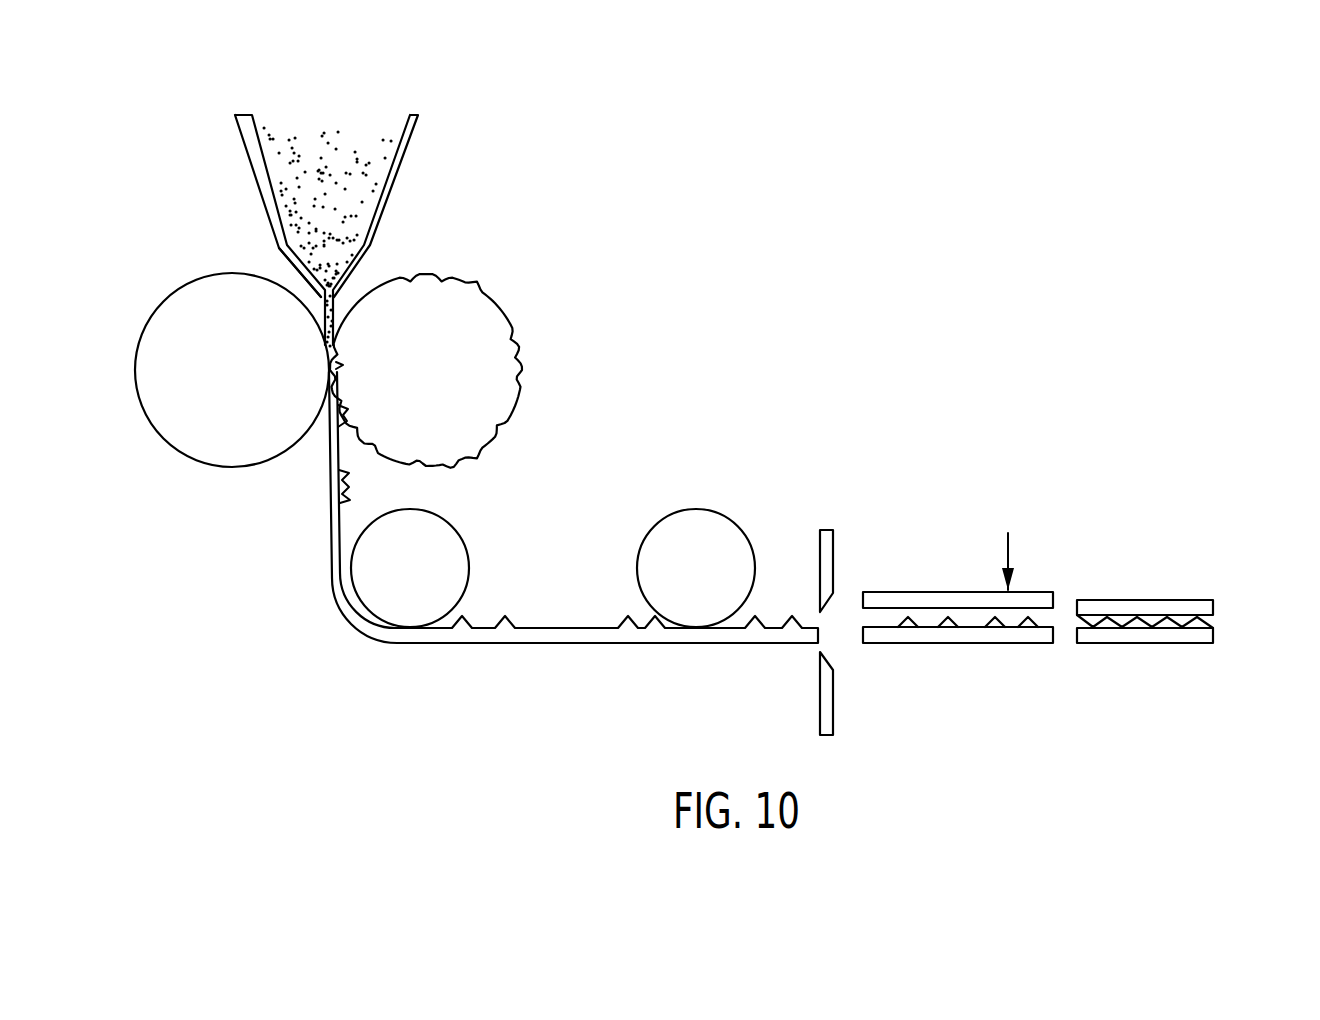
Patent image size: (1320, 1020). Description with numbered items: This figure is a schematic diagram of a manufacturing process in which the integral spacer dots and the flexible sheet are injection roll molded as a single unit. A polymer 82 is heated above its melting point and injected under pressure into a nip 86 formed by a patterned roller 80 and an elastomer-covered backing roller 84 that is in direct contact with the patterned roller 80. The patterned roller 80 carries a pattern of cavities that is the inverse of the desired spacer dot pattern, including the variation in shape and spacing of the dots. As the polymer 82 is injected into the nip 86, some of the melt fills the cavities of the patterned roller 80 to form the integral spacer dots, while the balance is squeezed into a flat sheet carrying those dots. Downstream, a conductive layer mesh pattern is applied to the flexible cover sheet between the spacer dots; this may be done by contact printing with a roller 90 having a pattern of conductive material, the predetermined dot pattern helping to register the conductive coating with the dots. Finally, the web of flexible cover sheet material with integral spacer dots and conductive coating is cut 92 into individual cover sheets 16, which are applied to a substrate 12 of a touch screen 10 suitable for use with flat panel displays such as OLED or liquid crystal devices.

The touch screen 10 is at (1196, 566).
The substrate 12 is at (1053, 592).
The cover sheets 16 is at (1038, 643).
The patterned roller 80 is at (492, 298).
The polymer 82 is at (342, 142).
The elastomer-covered backing roller 84 is at (157, 302).
The nip 86 is at (318, 296).
The roller 90 is at (714, 510).
The cut 92 is at (835, 538).